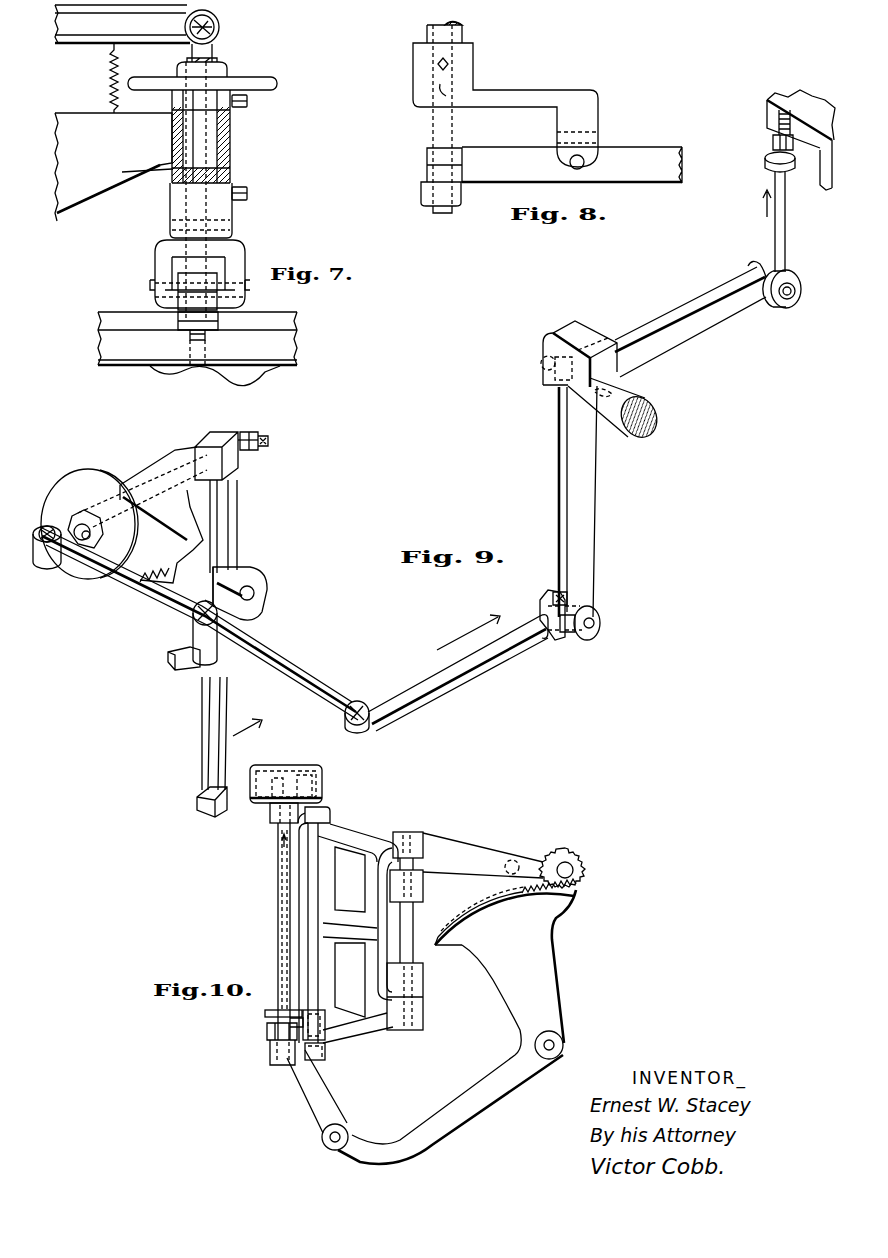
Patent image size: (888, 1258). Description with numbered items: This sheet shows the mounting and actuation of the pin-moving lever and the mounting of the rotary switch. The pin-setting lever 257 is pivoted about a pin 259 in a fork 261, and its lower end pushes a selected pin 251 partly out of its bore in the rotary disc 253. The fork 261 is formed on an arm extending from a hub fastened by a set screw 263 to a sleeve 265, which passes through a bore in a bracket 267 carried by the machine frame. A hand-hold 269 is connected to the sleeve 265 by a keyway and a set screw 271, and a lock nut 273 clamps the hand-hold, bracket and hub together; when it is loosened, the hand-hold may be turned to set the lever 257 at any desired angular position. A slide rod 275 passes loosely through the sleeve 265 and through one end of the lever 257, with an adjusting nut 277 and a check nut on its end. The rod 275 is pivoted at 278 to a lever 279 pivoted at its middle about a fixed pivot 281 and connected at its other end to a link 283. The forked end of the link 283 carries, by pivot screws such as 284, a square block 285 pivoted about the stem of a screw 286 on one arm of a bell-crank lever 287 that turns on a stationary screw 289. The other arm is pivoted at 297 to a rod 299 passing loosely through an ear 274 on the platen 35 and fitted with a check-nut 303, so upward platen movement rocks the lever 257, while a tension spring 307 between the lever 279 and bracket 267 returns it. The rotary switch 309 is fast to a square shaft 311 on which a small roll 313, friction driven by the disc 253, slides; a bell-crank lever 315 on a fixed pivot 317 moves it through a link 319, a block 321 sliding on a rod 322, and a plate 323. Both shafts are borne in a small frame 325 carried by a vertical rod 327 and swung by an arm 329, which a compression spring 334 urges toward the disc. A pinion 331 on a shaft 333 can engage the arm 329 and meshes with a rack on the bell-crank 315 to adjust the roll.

In FIG. 9, the platen 35 is at (784, 99).
In FIG. 7, the pin 251 is at (190, 352).
In FIG. 7, the rotary disc 253 is at (130, 368).
In FIG. 7, the pin-setting lever 257 is at (245, 298).
In FIG. 8, the pin-setting lever 257 is at (490, 152).
In FIG. 9, the pin-setting lever 257 is at (205, 440).
In FIG. 8, the pivot pin 259 is at (581, 165).
In FIG. 9, the pivot pin 259 is at (256, 595).
In FIG. 7, the fork 261 is at (232, 212).
In FIG. 8, the fork 261 is at (466, 59).
In FIG. 9, the fork 261 is at (226, 629).
In FIG. 7, the set screw 263 is at (247, 193).
In FIG. 7, the sleeve 265 is at (231, 143).
In FIG. 7, the bracket 267 is at (85, 110).
In FIG. 7, the hand-hold 269 is at (278, 84).
In FIG. 7, the set screw 271 is at (247, 102).
In FIG. 7, the lock nut 273 is at (228, 75).
In FIG. 9, the ear 274 is at (766, 156).
In FIG. 7, the slide rod 275 is at (213, 51).
In FIG. 9, the slide rod 275 is at (270, 442).
In FIG. 7, the adjusting nut 277 is at (219, 318).
In FIG. 8, the adjusting nut 277 is at (430, 183).
In FIG. 9, the adjusting nut 277 is at (232, 433).
In FIG. 9, the pivot 278 is at (54, 575).
In FIG. 7, the lever 279 is at (87, 46).
In FIG. 9, the lever 279 is at (118, 577).
In FIG. 9, the fixed pivot 281 is at (193, 614).
In FIG. 9, the link 283 is at (452, 682).
In FIG. 9, the pivot screw 284 is at (553, 594).
In FIG. 9, the square block 285 is at (558, 637).
In FIG. 9, the screw 286 is at (600, 624).
In FIG. 9, the bell-crank lever 287 is at (692, 304).
In FIG. 9, the stationary screw 289 is at (541, 365).
In FIG. 9, the pivot 297 is at (788, 299).
In FIG. 9, the rod 299 is at (774, 240).
In FIG. 9, the check-nut 303 is at (776, 142).
In FIG. 7, the tension spring 307 is at (120, 72).
In FIG. 9, the tension spring 307 is at (148, 567).
In FIG. 9, the rotary switch 309 is at (357, 717).
In FIG. 10, the rotary switch 309 is at (297, 767).
In FIG. 10, the square shaft 311 is at (280, 846).
In FIG. 10, the small roll 313 is at (268, 1031).
In FIG. 10, the bell-crank lever 315 is at (561, 957).
In FIG. 10, the fixed pivot 317 is at (562, 1042).
In FIG. 10, the link 319 is at (340, 1094).
In FIG. 10, the sliding block 321 is at (320, 1013).
In FIG. 10, the rod 322 is at (312, 892).
In FIG. 10, the plate 323 is at (277, 1002).
In FIG. 10, the small frame 325 is at (350, 825).
In FIG. 10, the vertical rod 327 is at (414, 928).
In FIG. 10, the arm 329 is at (472, 849).
In FIG. 10, the pinion 331 is at (564, 849).
In FIG. 10, the shaft 333 is at (575, 866).
In FIG. 10, the compression spring 334 is at (517, 861).